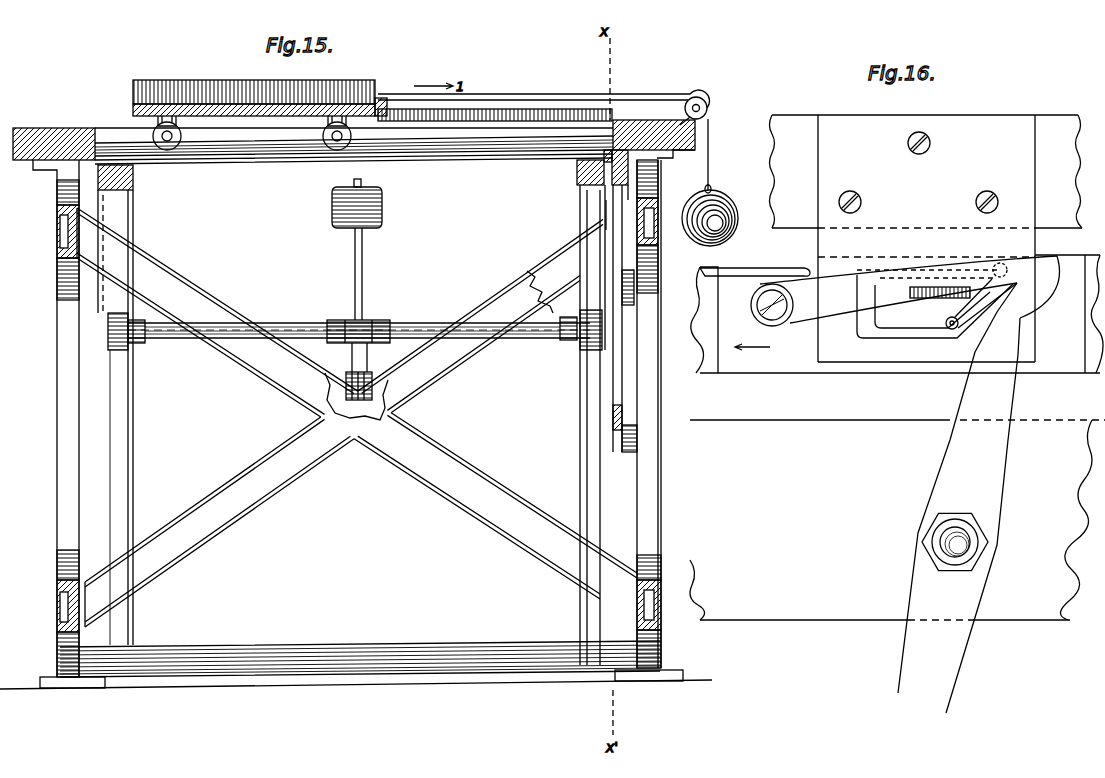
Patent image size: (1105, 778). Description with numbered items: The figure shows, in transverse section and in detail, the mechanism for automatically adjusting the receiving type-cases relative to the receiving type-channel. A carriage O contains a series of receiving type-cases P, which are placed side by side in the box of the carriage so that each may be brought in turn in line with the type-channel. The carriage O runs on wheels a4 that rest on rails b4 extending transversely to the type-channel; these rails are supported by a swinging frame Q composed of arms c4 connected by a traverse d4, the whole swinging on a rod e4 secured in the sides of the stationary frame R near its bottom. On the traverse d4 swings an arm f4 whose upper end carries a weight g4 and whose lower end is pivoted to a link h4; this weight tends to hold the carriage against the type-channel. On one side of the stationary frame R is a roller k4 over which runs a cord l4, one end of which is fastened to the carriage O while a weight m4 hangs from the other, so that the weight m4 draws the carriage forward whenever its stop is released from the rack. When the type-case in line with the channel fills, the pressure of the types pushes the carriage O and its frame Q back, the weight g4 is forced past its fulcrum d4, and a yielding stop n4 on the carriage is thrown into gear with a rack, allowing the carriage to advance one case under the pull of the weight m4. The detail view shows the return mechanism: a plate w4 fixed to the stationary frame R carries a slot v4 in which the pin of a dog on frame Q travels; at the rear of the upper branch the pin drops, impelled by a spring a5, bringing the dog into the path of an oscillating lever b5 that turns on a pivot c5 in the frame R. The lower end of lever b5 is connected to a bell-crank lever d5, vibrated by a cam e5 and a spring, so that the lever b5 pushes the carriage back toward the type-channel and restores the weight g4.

In FIG. 15, the carriage O is at (354, 111).
In FIG. 15, the receiving type-cases P is at (260, 89).
In FIG. 15, the wheels a4 is at (252, 133).
In FIG. 15, the rails b4 is at (354, 144).
In FIG. 15, the cord l4 is at (544, 97).
In FIG. 16, the cord l4 is at (905, 291).
In FIG. 15, the roller k4 is at (697, 103).
In FIG. 15, the weight m4 is at (710, 182).
In FIG. 15, the frame Q is at (581, 176).
In FIG. 16, the frame Q is at (897, 314).
In FIG. 15, the stationary frame R is at (347, 418).
In FIG. 16, the stationary frame R is at (897, 367).
In FIG. 15, the arms c4 is at (360, 421).
In FIG. 15, the traverse d4 is at (365, 330).
In FIG. 15, the weight g4 is at (357, 203).
In FIG. 15, the arm f4 is at (364, 300).
In FIG. 15, the link h4 is at (356, 396).
In FIG. 15, the rod e4 is at (592, 425).
In FIG. 15, the bell-crank lever d5 is at (624, 301).
In FIG. 15, the plate w4 is at (616, 140).
In FIG. 16, the plate w4 is at (918, 173).
In FIG. 15, the stop n4 is at (632, 186).
In FIG. 16, the stop n4 is at (1001, 265).
In FIG. 15, the oscillating lever b5 is at (615, 214).
In FIG. 16, the oscillating lever b5 is at (959, 498).
In FIG. 16, the slot v4 is at (935, 306).
In FIG. 16, the cam e5 is at (955, 541).
In FIG. 16, the pivot c5 is at (981, 304).
In FIG. 16, the spring a5 is at (755, 264).